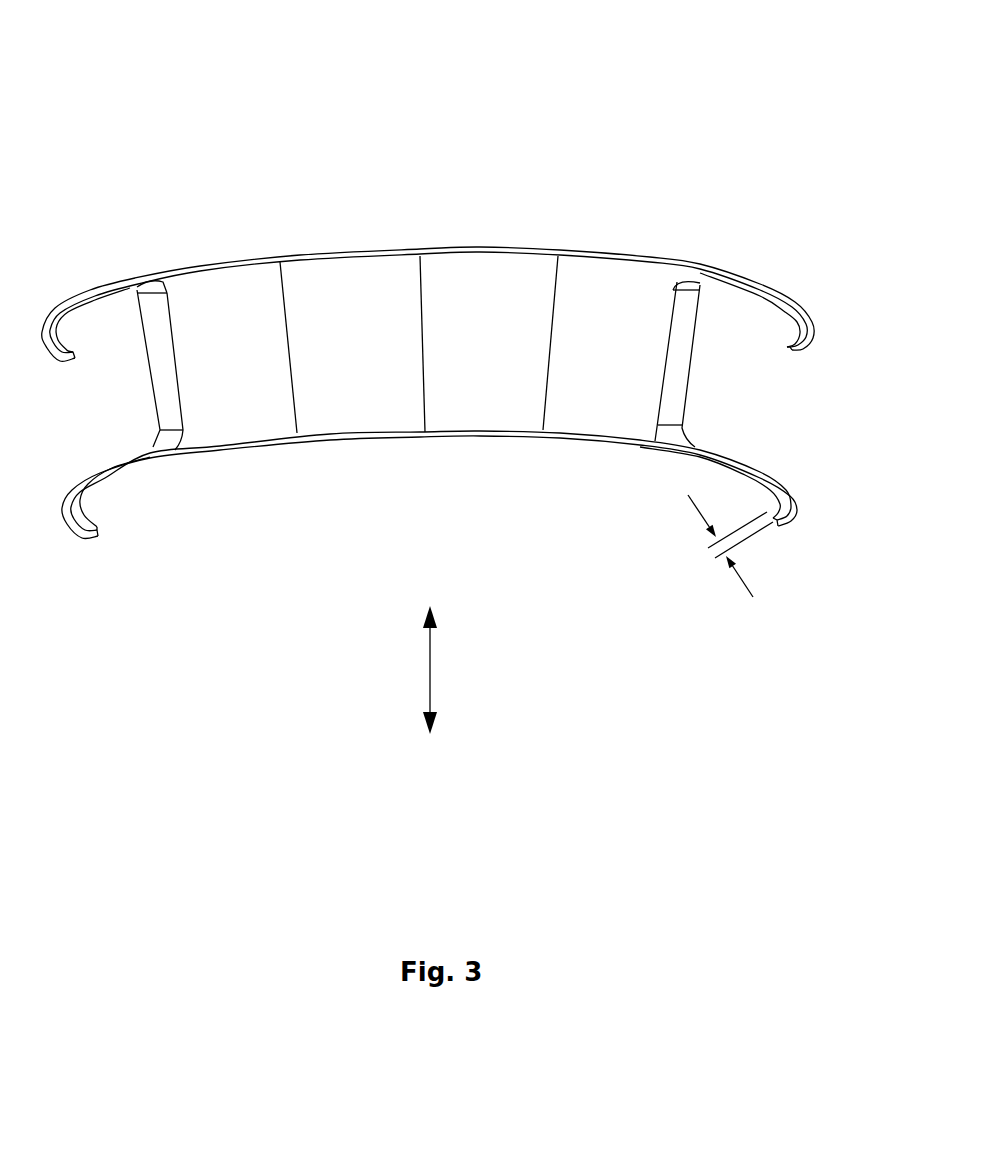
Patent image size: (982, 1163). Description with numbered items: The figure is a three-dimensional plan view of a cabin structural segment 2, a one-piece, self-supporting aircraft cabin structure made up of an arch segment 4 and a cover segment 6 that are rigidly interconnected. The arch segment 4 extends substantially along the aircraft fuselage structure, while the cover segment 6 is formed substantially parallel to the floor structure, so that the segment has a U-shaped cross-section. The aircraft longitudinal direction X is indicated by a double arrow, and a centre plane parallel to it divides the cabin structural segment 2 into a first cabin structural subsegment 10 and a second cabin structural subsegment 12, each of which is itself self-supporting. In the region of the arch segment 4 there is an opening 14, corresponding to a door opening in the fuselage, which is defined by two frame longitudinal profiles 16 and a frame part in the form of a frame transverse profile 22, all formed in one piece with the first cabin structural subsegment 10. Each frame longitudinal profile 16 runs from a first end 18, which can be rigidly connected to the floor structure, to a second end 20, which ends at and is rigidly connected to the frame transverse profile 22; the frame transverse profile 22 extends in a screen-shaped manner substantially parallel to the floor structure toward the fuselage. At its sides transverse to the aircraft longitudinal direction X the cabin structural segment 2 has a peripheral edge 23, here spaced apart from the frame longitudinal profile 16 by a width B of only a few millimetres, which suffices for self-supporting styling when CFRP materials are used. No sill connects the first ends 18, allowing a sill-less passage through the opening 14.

The cabin structural segment 2 is at (415, 120).
The arch segment 4 is at (607, 283).
The cover segment 6 is at (470, 280).
The first cabin structural subsegment 10 is at (762, 165).
The second cabin structural subsegment 12 is at (200, 186).
The opening 14 is at (803, 300).
The frame longitudinal profile 16 is at (758, 277).
The first end of the frame longitudinal profile 18 is at (793, 350).
The second end of the frame longitudinal profile 20 is at (710, 277).
The frame transverse profile 22 is at (670, 393).
The peripheral edge 23 is at (350, 250).
The width B is at (730, 546).
The aircraft longitudinal direction X is at (432, 676).